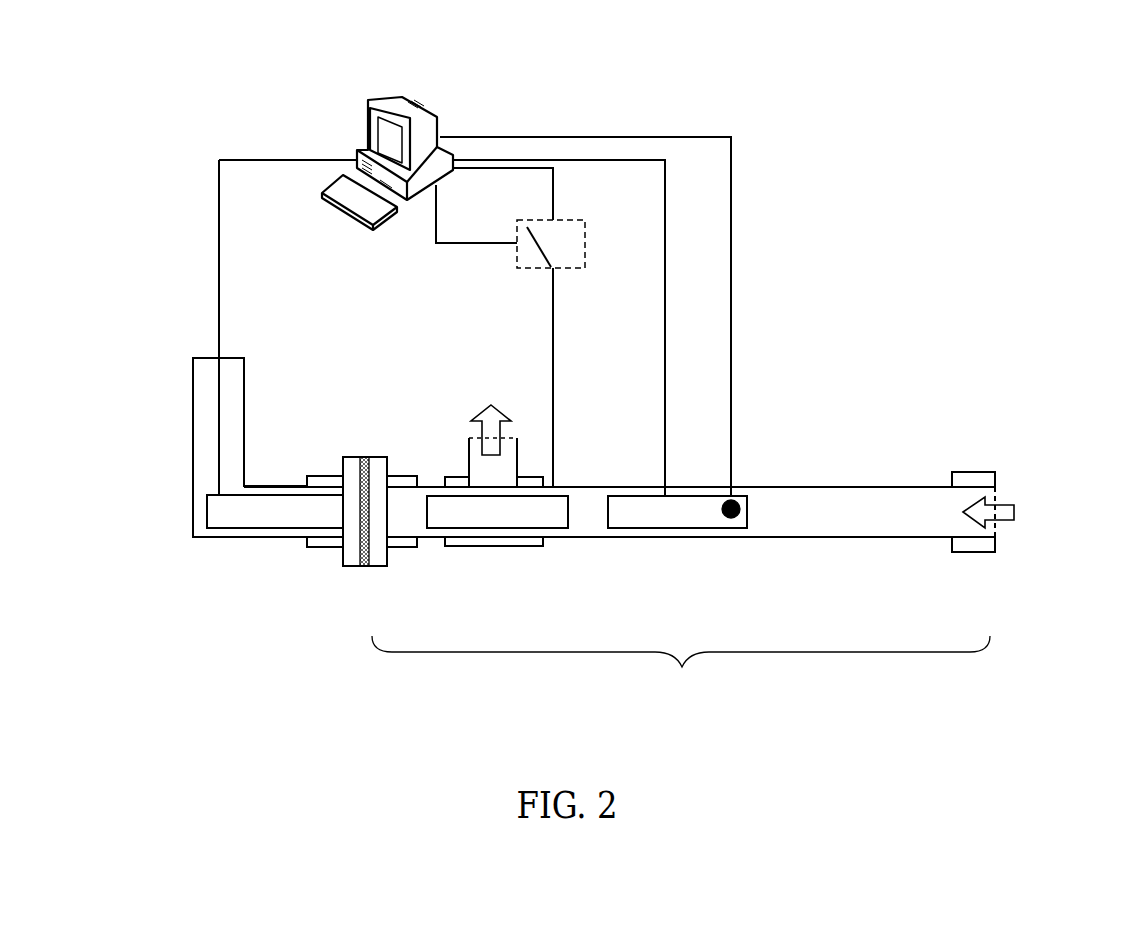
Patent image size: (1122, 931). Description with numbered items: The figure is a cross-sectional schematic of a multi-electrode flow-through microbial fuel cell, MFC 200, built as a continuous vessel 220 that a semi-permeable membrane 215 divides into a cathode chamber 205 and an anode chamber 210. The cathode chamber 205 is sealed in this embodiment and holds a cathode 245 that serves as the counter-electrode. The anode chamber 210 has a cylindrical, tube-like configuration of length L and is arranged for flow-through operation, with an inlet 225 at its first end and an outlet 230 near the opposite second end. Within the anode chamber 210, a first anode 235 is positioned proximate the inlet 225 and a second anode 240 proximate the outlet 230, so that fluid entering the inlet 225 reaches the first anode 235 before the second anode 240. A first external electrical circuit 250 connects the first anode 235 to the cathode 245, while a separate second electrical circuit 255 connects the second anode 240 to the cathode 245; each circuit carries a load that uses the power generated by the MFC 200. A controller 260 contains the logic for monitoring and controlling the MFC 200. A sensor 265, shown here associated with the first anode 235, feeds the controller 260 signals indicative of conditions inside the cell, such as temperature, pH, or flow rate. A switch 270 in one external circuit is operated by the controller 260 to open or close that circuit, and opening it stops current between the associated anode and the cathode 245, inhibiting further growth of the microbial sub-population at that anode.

The multi-electrode flow-through MFC 200 is at (942, 112).
The cathode chamber 205 is at (207, 398).
The anode chamber 210 is at (895, 526).
The semi-permeable membrane 215 is at (365, 457).
The continuous vessel 220 is at (310, 550).
The inlet 225 is at (988, 528).
The outlet 230 is at (473, 437).
The first anode 235 is at (622, 522).
The second anode 240 is at (434, 522).
The cathode 245 is at (207, 512).
The first external electrical circuit 250 is at (665, 432).
The second electrical circuit 255 is at (552, 325).
The controller 260 is at (440, 120).
The sensor 265 is at (740, 509).
The switch 270 is at (517, 257).